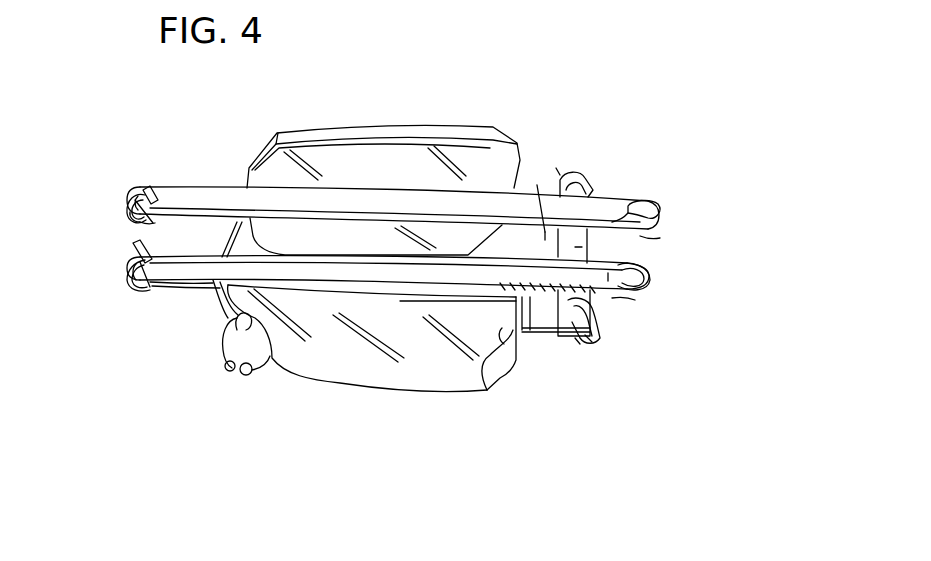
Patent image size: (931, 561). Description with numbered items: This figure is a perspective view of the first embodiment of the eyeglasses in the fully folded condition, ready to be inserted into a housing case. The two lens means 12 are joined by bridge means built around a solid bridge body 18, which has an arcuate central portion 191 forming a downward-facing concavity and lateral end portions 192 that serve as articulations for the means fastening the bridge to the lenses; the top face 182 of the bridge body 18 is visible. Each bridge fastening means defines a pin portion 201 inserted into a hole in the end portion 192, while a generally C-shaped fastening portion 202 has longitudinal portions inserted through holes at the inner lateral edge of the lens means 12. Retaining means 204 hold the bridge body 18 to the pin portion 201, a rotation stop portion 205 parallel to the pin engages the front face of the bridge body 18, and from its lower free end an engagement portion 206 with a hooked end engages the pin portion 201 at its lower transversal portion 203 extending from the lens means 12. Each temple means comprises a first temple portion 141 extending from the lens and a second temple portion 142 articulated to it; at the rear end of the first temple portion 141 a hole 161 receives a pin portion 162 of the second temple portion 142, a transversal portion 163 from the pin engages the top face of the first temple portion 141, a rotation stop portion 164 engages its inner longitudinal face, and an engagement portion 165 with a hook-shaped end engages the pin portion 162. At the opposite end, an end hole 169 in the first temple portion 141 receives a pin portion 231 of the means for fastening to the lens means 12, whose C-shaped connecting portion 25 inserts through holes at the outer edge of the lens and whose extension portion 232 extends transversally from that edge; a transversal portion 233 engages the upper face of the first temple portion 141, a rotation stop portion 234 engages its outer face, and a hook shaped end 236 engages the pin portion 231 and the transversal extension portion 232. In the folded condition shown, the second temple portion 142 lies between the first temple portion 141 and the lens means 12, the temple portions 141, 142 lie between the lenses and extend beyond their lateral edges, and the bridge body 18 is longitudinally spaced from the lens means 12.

The lens means 12 is at (383, 128).
The bridge body 18 is at (582, 222).
The connecting portion 25 is at (262, 392).
The first temple portion 141 is at (212, 195).
The second temple portion 142 is at (537, 185).
The hole 161 is at (648, 254).
The pin portion 162 is at (660, 259).
The transversal portion 163 is at (638, 262).
The rotation stop portion 164 is at (647, 279).
The engagement portion 165 is at (620, 293).
The end hole 169 is at (163, 190).
The top face 182 is at (645, 242).
The central portion 191 is at (545, 232).
The lateral end portion 192 is at (558, 180).
The pin portion 201 is at (617, 301).
The fastening portion 202 is at (487, 393).
The transversal portion 203 is at (560, 337).
The retaining means 204 is at (586, 172).
The rotation stop portion 205 is at (598, 343).
The engagement portion 206 is at (585, 345).
The pin portion 231 is at (148, 190).
The extension portion 232 is at (212, 290).
The transversal portion 233 is at (135, 198).
The rotation stop portion 234 is at (128, 214).
The hook shaped end 236 is at (138, 224).